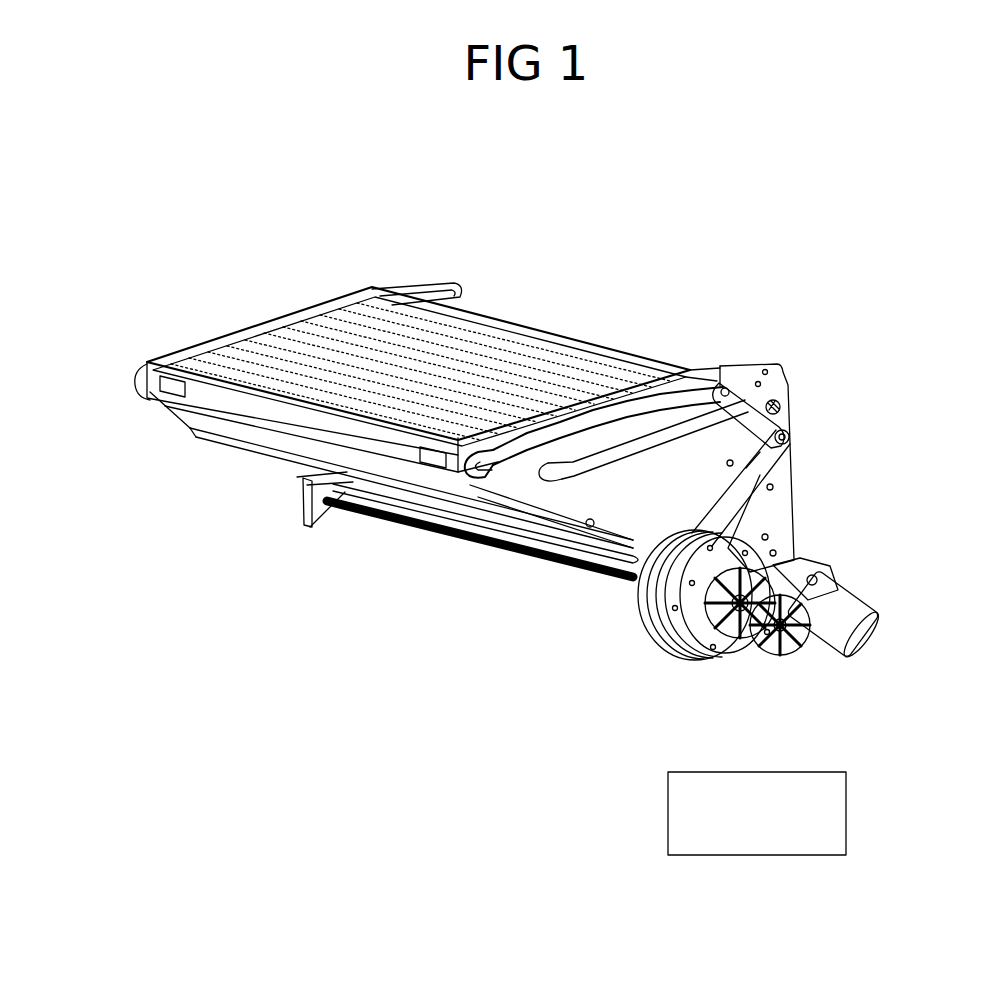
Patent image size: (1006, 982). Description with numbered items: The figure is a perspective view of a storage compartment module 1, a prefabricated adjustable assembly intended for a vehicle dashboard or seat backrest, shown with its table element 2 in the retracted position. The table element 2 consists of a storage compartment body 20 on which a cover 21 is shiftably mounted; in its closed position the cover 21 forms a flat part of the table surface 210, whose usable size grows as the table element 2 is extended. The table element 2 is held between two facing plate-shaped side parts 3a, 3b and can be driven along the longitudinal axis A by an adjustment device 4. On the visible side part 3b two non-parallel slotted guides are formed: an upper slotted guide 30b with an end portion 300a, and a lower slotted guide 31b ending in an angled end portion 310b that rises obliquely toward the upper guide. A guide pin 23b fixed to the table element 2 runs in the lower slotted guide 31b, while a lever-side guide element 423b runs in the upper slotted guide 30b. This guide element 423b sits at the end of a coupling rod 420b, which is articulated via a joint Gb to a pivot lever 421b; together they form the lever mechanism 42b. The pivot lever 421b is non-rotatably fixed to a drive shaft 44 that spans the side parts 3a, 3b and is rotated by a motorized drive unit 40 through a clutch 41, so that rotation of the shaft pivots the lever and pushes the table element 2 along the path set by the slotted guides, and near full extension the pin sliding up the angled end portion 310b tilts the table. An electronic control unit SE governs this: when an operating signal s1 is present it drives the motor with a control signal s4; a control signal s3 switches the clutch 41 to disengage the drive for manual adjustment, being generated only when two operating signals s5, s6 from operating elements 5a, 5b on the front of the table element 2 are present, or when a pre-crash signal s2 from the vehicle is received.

The storage compartment module 1 is at (292, 262).
The table element 2 is at (549, 318).
The storage compartment body 20 is at (292, 423).
The cover 21 is at (265, 352).
The table surface 210 is at (400, 347).
The end portion of upper slotted guide 300a is at (486, 455).
The upper slotted guide 30b is at (690, 376).
The angled end portion of lower slotted guide 310b is at (544, 476).
The lower slotted guide 31b is at (574, 484).
The side part 3a is at (308, 511).
The side part 3b is at (783, 513).
The adjustment device 4 is at (832, 568).
The motorized drive unit 40 is at (838, 604).
The clutch 41 is at (652, 640).
The lever mechanism 42b is at (824, 437).
The coupling rod 420b is at (776, 386).
The pivot lever 421b is at (770, 467).
The guide element 423b is at (728, 390).
The guide pin 23b is at (786, 404).
The joint Gb is at (790, 431).
The drive shaft 44 is at (380, 513).
The operating element 5a is at (153, 394).
The operating element 5b is at (419, 468).
The longitudinal axis A is at (244, 425).
The electronic control unit SE is at (757, 813).
The control or operating signal s1 is at (848, 790).
The control signal of pre-crash sensor system s2 is at (848, 835).
The control signal for clutch s3 is at (695, 660).
The control signal for drive unit s4 is at (800, 660).
The operating signal s5 is at (433, 466).
The operating signal s6 is at (172, 396).